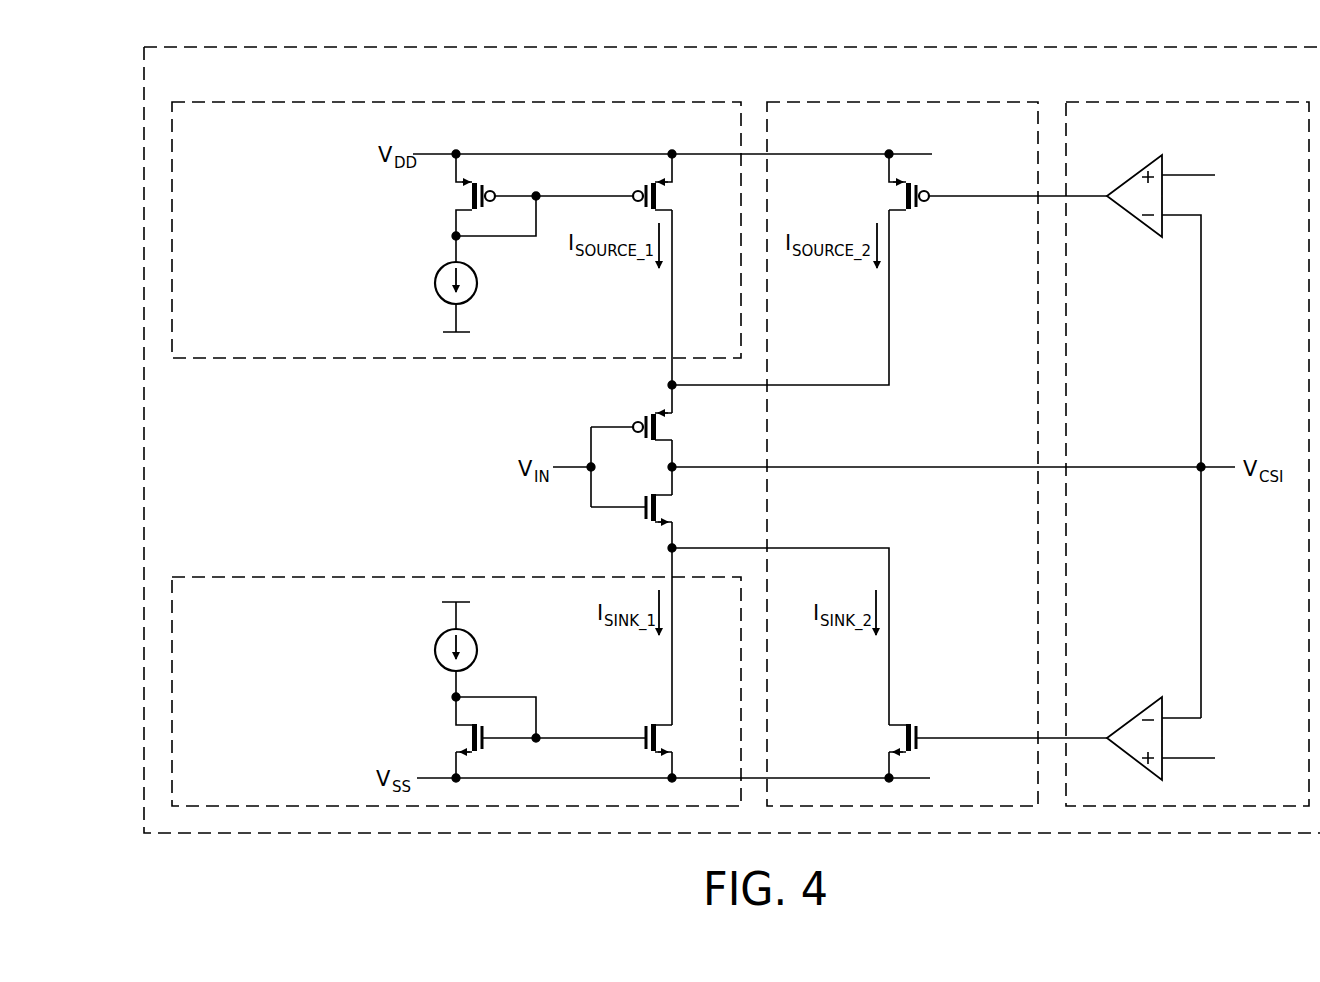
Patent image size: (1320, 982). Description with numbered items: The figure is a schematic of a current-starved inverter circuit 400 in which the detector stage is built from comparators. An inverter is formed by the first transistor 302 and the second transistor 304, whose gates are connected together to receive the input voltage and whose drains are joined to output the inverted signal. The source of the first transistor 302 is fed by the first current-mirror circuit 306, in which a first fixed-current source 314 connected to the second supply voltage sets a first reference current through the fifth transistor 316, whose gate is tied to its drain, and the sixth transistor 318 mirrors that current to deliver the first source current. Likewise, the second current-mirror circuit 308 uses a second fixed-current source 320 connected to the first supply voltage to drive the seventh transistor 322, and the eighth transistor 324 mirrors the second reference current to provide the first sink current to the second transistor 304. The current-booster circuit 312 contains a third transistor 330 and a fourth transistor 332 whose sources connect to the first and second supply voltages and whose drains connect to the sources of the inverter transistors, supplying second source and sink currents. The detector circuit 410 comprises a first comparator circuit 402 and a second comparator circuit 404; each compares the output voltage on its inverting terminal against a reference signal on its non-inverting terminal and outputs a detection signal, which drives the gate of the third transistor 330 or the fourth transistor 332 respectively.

The current-starved inverter circuit 400 is at (352, 848).
The first current-mirror circuit 306 is at (315, 358).
The second current-mirror circuit 308 is at (313, 577).
The current-booster circuit 312 is at (940, 102).
The detector circuit 410 is at (1205, 102).
The first transistor 302 is at (658, 427).
The second transistor 304 is at (658, 507).
The first fixed-current source 314 is at (477, 285).
The fifth transistor 316 is at (472, 196).
The sixth transistor 318 is at (658, 196).
The second fixed-current source 320 is at (477, 652).
The seventh transistor 322 is at (472, 744).
The eighth transistor 324 is at (647, 722).
The third transistor 330 is at (906, 198).
The fourth transistor 332 is at (906, 740).
The first comparator circuit 402 is at (1131, 221).
The second comparator circuit 404 is at (1128, 712).